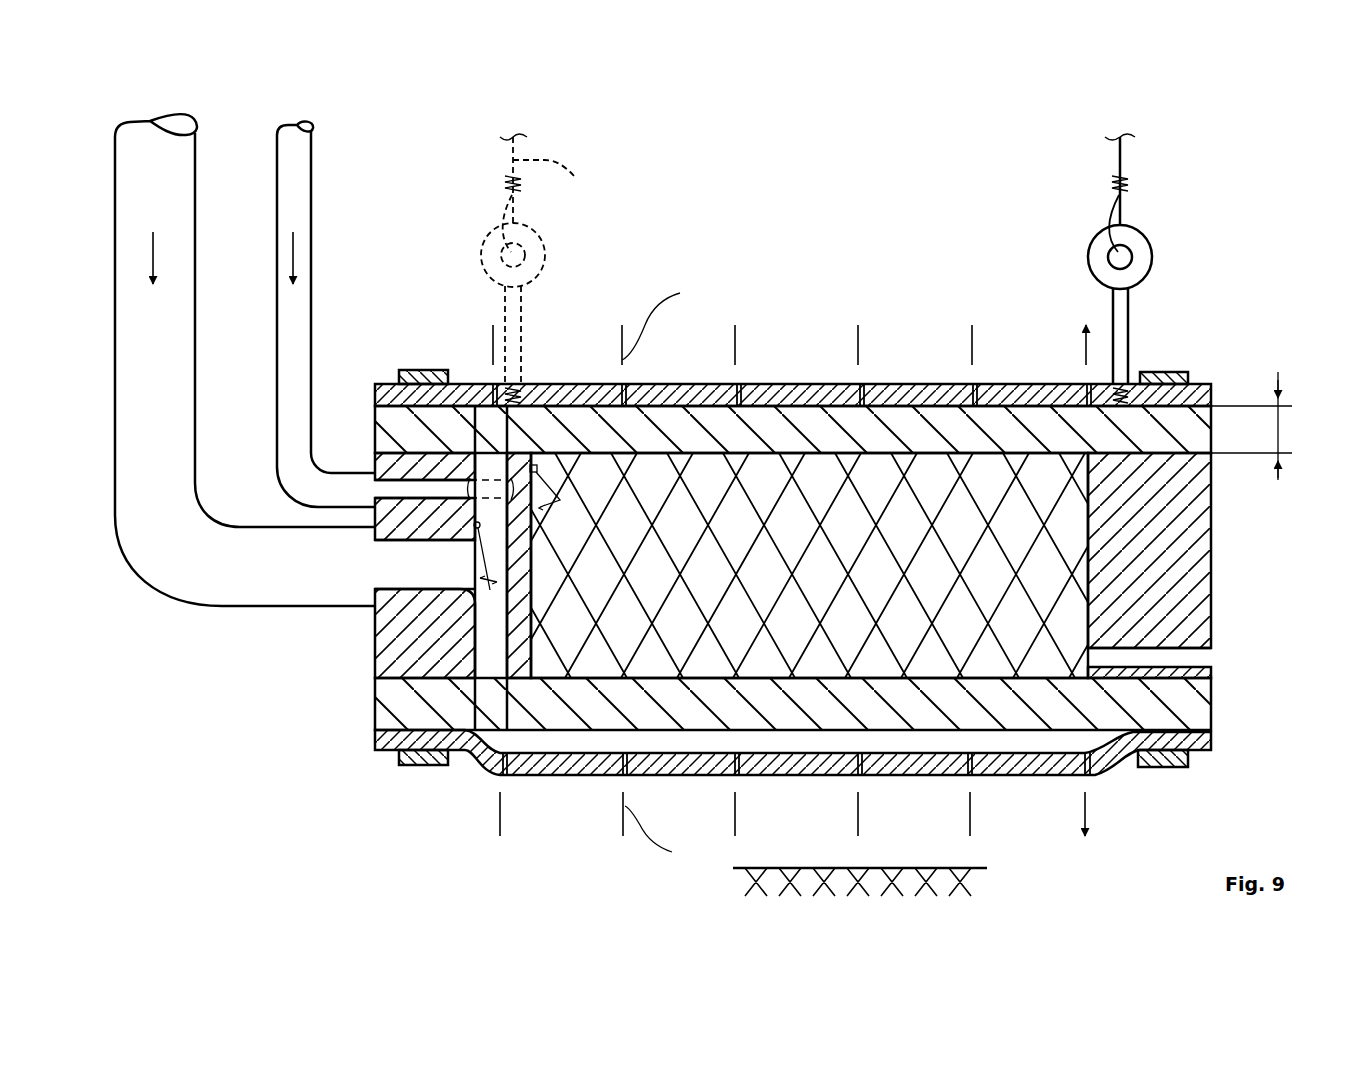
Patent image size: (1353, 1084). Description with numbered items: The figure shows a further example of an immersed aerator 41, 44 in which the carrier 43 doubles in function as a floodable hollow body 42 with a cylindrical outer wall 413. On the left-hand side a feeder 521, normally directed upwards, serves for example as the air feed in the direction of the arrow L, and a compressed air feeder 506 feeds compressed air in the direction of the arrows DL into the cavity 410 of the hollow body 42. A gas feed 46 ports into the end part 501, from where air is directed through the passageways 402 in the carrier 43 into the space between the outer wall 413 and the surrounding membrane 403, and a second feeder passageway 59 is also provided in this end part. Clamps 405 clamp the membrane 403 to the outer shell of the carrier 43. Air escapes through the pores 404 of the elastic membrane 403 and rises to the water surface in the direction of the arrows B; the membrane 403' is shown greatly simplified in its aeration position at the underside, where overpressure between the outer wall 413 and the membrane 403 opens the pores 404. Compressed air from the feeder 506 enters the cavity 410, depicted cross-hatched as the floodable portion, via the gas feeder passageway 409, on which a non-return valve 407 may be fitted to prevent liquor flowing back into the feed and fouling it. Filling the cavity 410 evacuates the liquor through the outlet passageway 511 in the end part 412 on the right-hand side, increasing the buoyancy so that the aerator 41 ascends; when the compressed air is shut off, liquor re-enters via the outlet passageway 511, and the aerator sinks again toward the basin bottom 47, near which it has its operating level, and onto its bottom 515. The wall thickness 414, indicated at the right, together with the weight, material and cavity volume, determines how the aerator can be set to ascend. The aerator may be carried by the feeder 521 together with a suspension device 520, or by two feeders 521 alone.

The immersed aerator 41 is at (878, 260).
The floodable hollow body 42 is at (1195, 707).
The carrier 43 is at (392, 418).
The immersed aerator 44 is at (714, 322).
The gas feed 46 is at (253, 570).
The bottom 47 is at (958, 868).
The second feeder passageway 59 is at (395, 568).
The passageway 402 is at (487, 422).
The membrane 403 is at (793, 350).
The membrane 403' is at (793, 801).
The pore 404 is at (738, 386).
The clamp 405 is at (1163, 372).
The non-return valve 407 is at (562, 452).
The passageway 409 is at (413, 488).
The cavity 410 is at (800, 573).
The end part 412 is at (1152, 553).
The cylindrical outer wall 413 is at (812, 735).
The wall thickness 414 is at (1275, 432).
The end part 501 is at (403, 635).
The compressed air feeder 506 is at (313, 174).
The outlet passageway 511 is at (1198, 657).
The bottom 515 is at (1065, 680).
The suspension device 520 is at (1115, 150).
The feeder 521 is at (182, 172).